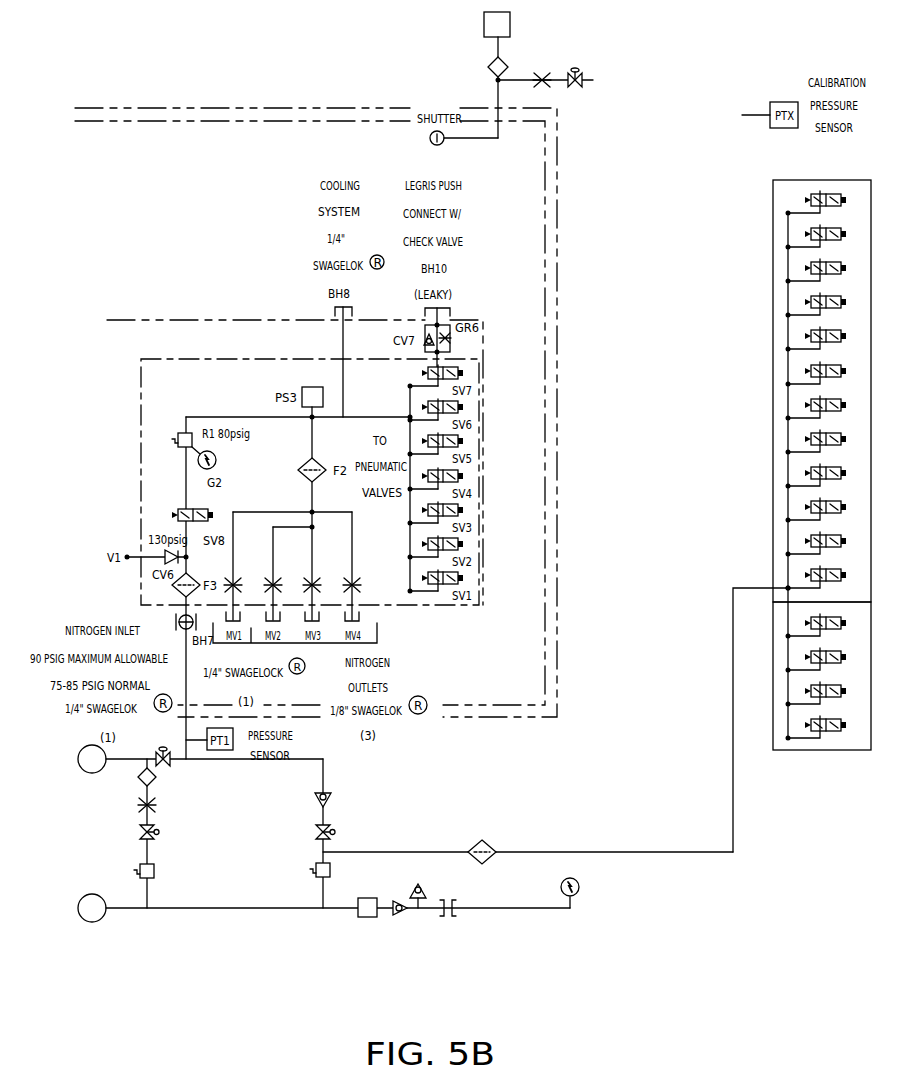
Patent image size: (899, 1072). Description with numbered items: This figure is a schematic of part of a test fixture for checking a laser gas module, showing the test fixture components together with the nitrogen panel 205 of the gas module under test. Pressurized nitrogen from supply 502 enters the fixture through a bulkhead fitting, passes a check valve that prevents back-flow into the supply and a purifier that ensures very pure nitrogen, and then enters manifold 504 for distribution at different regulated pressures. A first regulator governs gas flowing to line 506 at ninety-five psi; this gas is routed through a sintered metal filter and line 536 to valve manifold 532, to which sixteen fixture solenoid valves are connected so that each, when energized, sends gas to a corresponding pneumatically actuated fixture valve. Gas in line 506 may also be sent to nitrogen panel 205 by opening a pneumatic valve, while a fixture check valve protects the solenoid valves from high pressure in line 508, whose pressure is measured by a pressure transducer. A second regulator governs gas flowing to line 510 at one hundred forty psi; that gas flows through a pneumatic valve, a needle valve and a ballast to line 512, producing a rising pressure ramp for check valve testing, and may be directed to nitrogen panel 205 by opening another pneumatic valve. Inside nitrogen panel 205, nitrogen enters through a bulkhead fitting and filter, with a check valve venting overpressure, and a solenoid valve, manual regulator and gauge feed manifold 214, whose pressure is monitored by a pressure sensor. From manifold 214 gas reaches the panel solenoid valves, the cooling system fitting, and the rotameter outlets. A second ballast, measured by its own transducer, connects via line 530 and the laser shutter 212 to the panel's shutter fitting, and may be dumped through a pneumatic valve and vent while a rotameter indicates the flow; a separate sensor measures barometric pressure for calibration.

The nitrogen panel 205 is at (262, 359).
The laser shutter 212 is at (423, 107).
The manifold 214 is at (343, 415).
The supply 502 is at (603, 955).
The manifold 504 is at (296, 910).
The line 506 is at (322, 853).
The line 508 is at (275, 760).
The line 510 is at (146, 852).
The line 512 is at (112, 764).
The line 530 is at (498, 110).
The valve manifold 532 is at (773, 379).
The line 536 is at (733, 852).